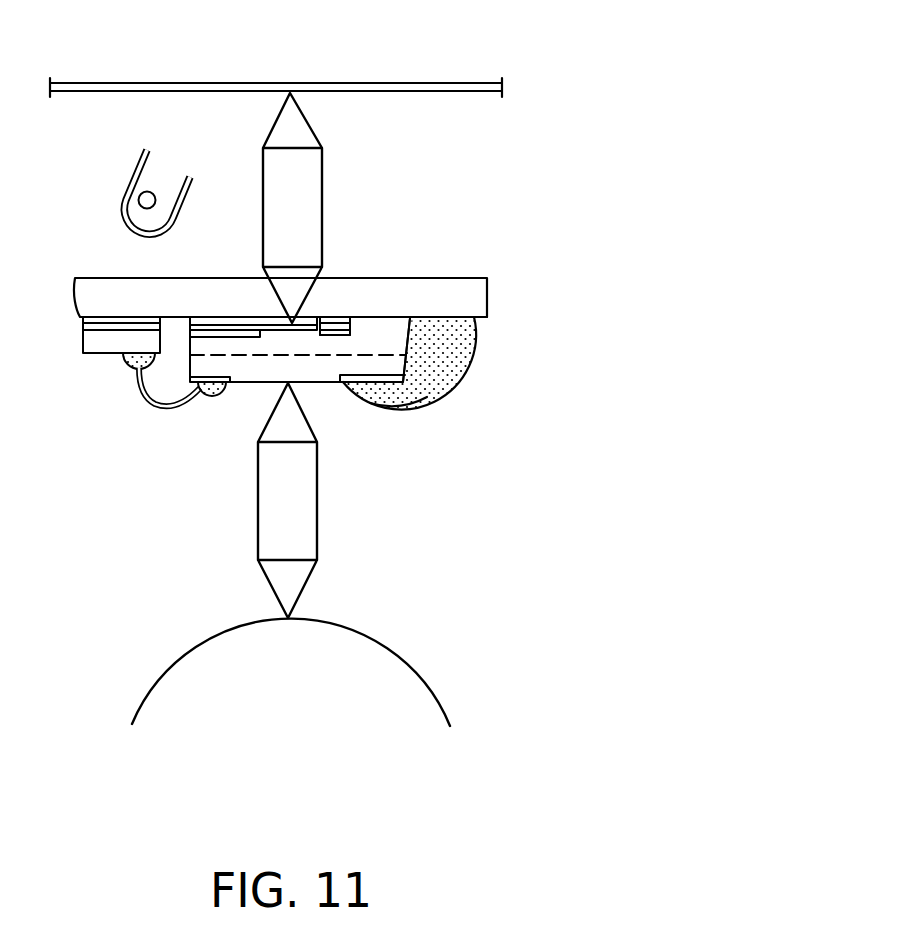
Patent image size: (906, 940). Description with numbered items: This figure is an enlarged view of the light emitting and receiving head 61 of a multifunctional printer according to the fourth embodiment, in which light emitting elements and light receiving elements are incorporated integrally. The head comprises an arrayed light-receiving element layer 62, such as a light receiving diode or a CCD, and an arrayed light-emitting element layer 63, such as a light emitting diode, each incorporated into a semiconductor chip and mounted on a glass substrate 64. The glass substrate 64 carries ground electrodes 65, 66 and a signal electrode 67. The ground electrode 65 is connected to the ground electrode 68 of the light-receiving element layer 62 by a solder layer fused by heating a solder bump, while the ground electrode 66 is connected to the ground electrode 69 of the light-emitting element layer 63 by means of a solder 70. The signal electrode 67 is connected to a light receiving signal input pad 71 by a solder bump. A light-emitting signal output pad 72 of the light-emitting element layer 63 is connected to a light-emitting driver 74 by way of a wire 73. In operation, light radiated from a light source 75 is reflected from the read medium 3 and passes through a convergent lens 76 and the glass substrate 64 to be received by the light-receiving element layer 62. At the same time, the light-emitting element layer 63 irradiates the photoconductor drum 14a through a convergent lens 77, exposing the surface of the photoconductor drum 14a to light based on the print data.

The read medium 3 is at (480, 82).
The photoconductor drum 14a is at (417, 673).
The light emitting and receiving head 61 is at (307, 387).
The light-receiving element layer 62 is at (390, 345).
The light-emitting element layer 63 is at (323, 367).
The glass substrate 64 is at (477, 300).
The ground electrode 65 is at (213, 320).
The ground electrode 66 is at (448, 317).
The signal electrode 67 is at (340, 318).
The ground electrode 68 is at (245, 332).
The ground electrode 69 is at (425, 397).
The solder 70 is at (453, 340).
The light receiving signal input pad 71 is at (335, 335).
The light-emitting signal output pad 72 is at (179, 385).
The wire 73 is at (147, 402).
The light-emitting driver 74 is at (107, 342).
The light source 75 is at (128, 170).
The convergent lens 76 is at (312, 185).
The convergent lens 77 is at (257, 525).